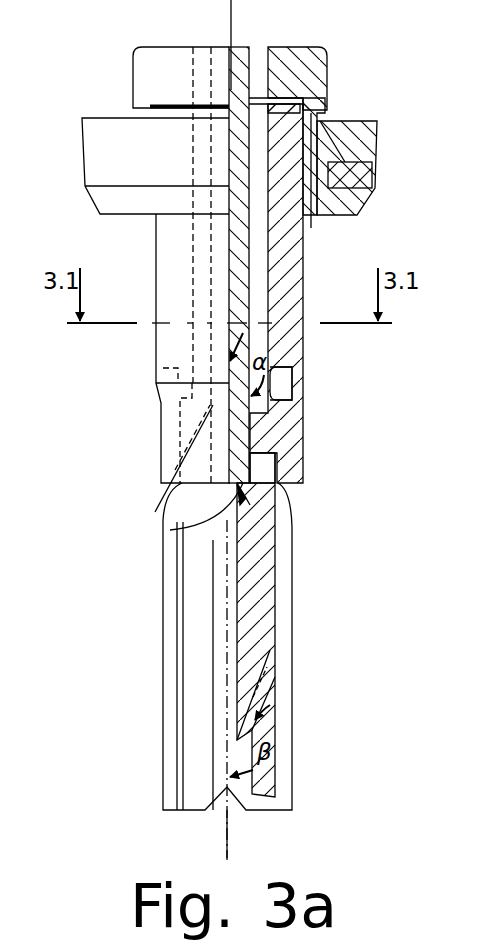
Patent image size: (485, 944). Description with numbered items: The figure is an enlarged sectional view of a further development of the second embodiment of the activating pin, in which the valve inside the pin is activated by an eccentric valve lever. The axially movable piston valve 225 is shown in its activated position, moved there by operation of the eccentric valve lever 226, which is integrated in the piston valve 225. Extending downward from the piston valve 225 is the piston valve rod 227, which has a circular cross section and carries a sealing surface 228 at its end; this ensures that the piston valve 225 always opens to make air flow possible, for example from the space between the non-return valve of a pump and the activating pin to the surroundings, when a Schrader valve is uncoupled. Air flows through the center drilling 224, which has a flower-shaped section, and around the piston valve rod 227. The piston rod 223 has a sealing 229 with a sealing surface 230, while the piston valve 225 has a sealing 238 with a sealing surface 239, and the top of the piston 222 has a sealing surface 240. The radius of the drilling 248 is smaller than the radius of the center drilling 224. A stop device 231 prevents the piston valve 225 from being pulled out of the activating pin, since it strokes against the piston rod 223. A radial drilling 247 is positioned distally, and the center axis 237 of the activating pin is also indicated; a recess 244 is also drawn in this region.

The piston 222 is at (355, 205).
The piston rod 223 is at (200, 657).
The center drilling 224 is at (256, 302).
The piston valve 225 is at (155, 60).
The eccentric valve lever 226 is at (313, 213).
The piston valve rod 227 is at (240, 343).
The sealing surface 228 is at (240, 478).
The sealing 229 is at (250, 505).
The sealing surface 230 is at (170, 530).
The stop device 231 is at (272, 446).
The center axis 237 is at (227, 825).
The sealing 238 is at (272, 103).
The sealing surface 239 is at (279, 117).
The sealing surface 240 is at (300, 100).
The recess 244 is at (282, 468).
The radial drilling 247 is at (276, 698).
The drilling 248 is at (227, 678).